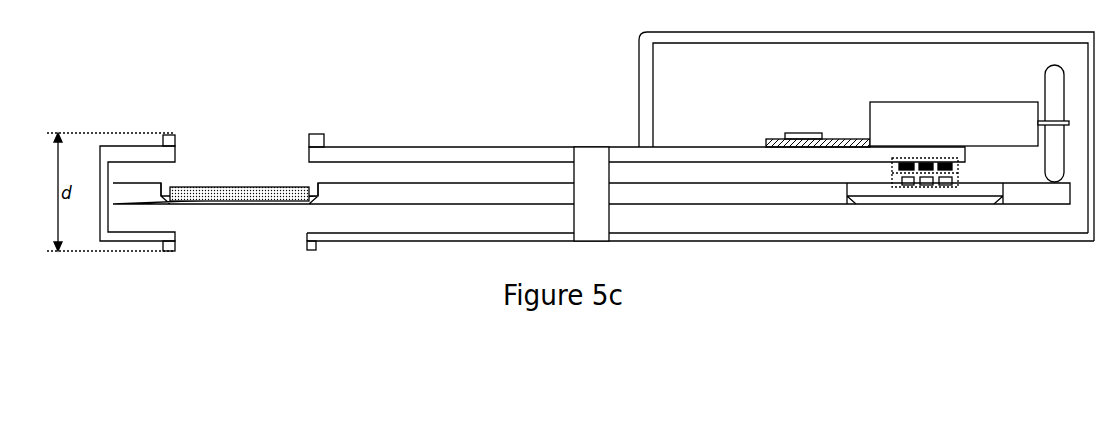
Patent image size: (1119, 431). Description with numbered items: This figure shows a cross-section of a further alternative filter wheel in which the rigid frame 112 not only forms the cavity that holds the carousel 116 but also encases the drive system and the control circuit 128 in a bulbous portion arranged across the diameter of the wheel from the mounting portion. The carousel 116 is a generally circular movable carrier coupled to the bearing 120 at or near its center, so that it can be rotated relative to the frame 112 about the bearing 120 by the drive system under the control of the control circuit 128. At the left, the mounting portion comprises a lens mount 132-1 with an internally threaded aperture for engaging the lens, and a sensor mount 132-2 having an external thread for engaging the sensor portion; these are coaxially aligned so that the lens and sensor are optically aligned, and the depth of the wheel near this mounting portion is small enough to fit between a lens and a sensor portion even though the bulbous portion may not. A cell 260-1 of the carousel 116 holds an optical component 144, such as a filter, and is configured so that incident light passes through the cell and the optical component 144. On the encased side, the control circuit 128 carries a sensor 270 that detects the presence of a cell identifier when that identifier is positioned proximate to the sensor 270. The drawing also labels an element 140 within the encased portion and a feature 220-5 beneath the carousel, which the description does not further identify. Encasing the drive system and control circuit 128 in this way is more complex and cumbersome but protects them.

The frame 112 is at (639, 32).
The carousel 116 is at (712, 206).
The bearing 120 is at (591, 160).
The control circuit 128 is at (757, 107).
The lens mount 132-1 is at (168, 134).
The sensor mount 132-2 is at (312, 251).
The motor 140 is at (863, 90).
The optical component 144 is at (275, 187).
The recess 220-5 is at (922, 192).
The cell 260-1 is at (211, 186).
The sensor 270 is at (893, 162).